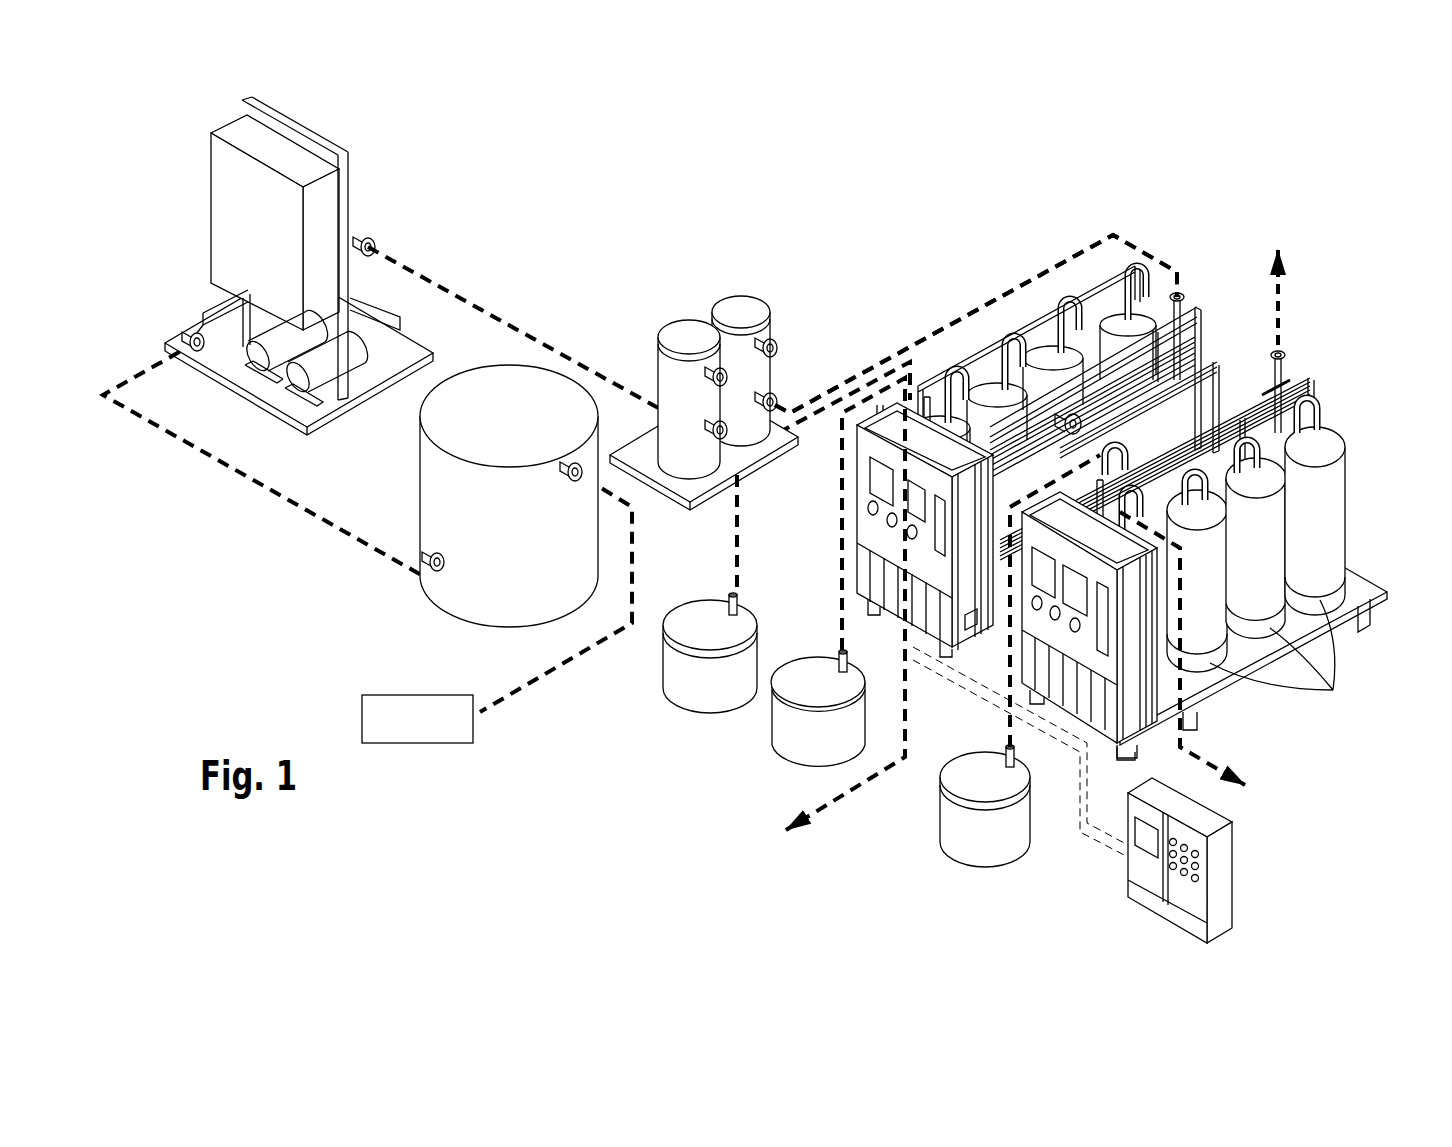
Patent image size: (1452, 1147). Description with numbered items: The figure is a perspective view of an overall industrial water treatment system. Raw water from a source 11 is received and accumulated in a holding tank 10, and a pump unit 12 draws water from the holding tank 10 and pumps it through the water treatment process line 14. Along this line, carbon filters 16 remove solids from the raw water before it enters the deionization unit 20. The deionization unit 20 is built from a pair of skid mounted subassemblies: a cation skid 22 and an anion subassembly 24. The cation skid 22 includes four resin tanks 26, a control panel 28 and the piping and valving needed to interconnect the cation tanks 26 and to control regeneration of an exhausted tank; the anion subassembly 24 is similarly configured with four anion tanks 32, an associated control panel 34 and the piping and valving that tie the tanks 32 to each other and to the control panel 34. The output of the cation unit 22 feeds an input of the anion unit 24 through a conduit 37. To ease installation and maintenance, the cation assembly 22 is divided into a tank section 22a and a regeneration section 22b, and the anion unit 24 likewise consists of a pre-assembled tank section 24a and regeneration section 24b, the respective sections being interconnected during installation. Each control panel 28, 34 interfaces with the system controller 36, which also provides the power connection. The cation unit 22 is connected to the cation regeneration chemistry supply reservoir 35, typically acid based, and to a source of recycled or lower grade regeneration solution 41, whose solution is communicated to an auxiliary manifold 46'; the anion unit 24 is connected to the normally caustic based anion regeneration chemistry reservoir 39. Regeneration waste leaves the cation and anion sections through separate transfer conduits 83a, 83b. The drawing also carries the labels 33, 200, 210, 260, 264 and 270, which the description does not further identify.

The holding tank 10 is at (536, 557).
The source 11 is at (398, 737).
The pump unit 12 is at (388, 203).
The water treatment process line 14 is at (1192, 168).
The carbon filters 16 is at (788, 300).
The deionization unit 20 is at (1292, 328).
The cation skid 22 is at (1088, 330).
The tank section 22a is at (1210, 318).
The regeneration section 22b is at (884, 527).
The anion subassembly 24 is at (1278, 569).
The tank section 24a is at (1328, 414).
The regeneration section 24b is at (1089, 687).
The resin tanks 26 is at (1110, 333).
The control panel 28 is at (873, 527).
The anion tanks 32 is at (1221, 596).
The feed line boundary 33 is at (938, 327).
The control panel 34 is at (1068, 640).
The cation regeneration chemistry supply reservoir 35 is at (839, 757).
The system controller 36 is at (1223, 893).
The conduit 37 is at (1073, 414).
The anion regeneration chemistry reservoir 39 is at (1002, 851).
The source of recycled or lower grade regeneration solution 41 is at (730, 700).
The auxiliary manifold 46' is at (1151, 283).
The transfer conduit 83a is at (862, 786).
The transfer conduit 83b is at (1200, 753).
The base platform 200 is at (1372, 590).
The distribution rail 210 is at (1317, 400).
The connector 260 is at (1285, 378).
The rail 264 is at (1222, 410).
The drain connectors 270 is at (1295, 653).